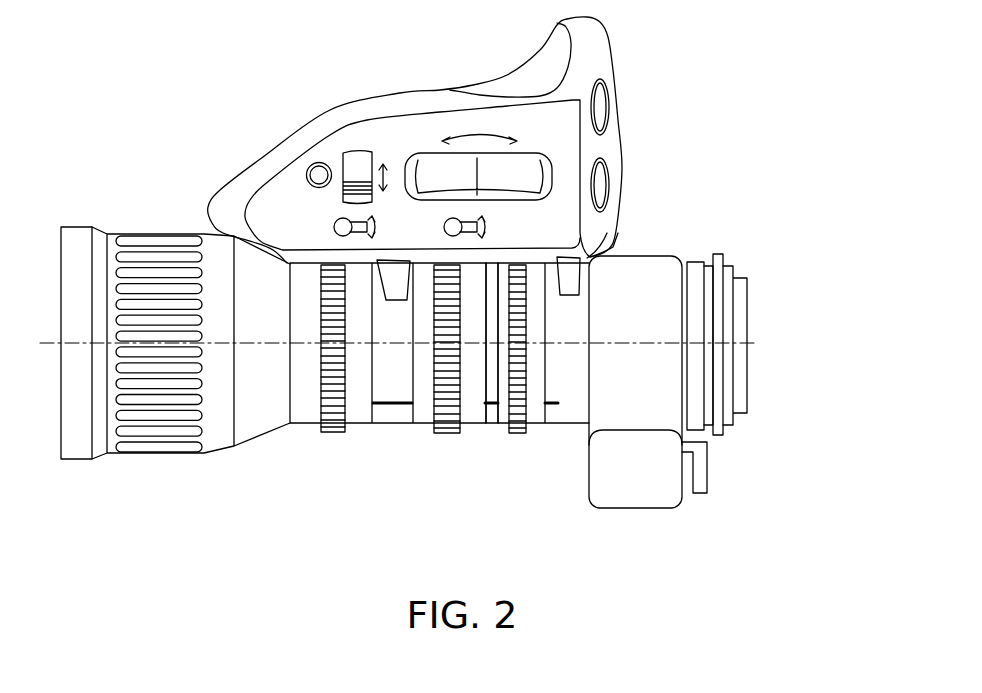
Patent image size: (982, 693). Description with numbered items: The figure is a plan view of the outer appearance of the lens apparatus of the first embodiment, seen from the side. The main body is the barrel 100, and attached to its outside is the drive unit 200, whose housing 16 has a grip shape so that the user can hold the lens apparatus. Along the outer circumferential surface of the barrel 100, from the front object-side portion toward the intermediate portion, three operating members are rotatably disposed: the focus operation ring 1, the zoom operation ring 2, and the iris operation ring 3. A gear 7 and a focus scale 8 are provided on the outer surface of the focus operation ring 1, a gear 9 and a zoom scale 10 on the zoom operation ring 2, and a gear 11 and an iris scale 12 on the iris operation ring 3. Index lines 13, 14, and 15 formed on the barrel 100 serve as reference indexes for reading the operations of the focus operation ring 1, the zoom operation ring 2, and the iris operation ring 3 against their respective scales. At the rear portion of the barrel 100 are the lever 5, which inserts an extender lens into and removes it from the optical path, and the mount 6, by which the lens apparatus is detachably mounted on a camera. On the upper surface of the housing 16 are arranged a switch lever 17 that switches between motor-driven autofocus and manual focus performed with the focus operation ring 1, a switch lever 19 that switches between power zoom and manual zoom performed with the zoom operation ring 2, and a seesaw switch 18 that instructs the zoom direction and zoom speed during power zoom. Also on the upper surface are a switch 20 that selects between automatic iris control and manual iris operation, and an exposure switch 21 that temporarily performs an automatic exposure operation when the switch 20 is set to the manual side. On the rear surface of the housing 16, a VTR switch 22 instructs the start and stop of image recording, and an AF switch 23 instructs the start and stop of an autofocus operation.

The focus operation ring 1 is at (260, 437).
The zoom operation ring 2 is at (417, 425).
The iris operation ring 3 is at (505, 425).
The lever 5 is at (707, 475).
The mount 6 is at (747, 413).
The gear 7 is at (325, 430).
The focus scale 8 is at (363, 423).
The gear 9 is at (447, 432).
The zoom scale 10 is at (473, 423).
The gear 11 is at (518, 433).
The iris scale 12 is at (537, 425).
The index line 13 is at (390, 404).
The index line 14 is at (492, 405).
The index line 15 is at (555, 407).
The housing 16 is at (610, 40).
The switch lever 17 is at (335, 221).
The seesaw switch 18 is at (435, 155).
The switch lever 19 is at (490, 225).
The switch 20 is at (351, 152).
The exposure switch 21 is at (311, 165).
The VTR switch 22 is at (608, 178).
The AF switch 23 is at (608, 108).
The barrel 100 is at (720, 253).
The drive unit 200 is at (608, 63).